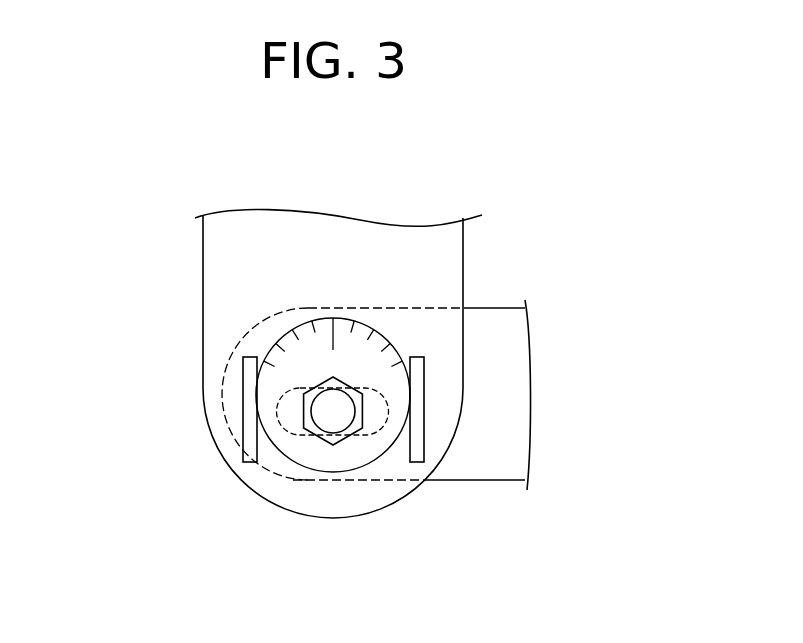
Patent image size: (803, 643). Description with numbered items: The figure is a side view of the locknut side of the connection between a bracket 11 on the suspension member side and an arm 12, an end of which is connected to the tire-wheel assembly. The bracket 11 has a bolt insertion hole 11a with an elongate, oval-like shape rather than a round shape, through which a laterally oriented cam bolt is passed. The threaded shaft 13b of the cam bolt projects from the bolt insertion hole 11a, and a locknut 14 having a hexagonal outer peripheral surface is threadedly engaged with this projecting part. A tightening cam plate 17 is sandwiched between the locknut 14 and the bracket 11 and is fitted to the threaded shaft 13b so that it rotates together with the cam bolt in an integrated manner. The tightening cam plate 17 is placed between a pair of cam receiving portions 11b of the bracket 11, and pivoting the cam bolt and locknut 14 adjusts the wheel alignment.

The bracket 11 is at (350, 219).
The bolt insertion hole 11a is at (376, 437).
The cam receiving portions 11b is at (243, 435).
The arm 12 is at (528, 397).
The threaded shaft 13b is at (342, 402).
The locknut 14 is at (317, 440).
The tightening cam plate 17 is at (305, 325).